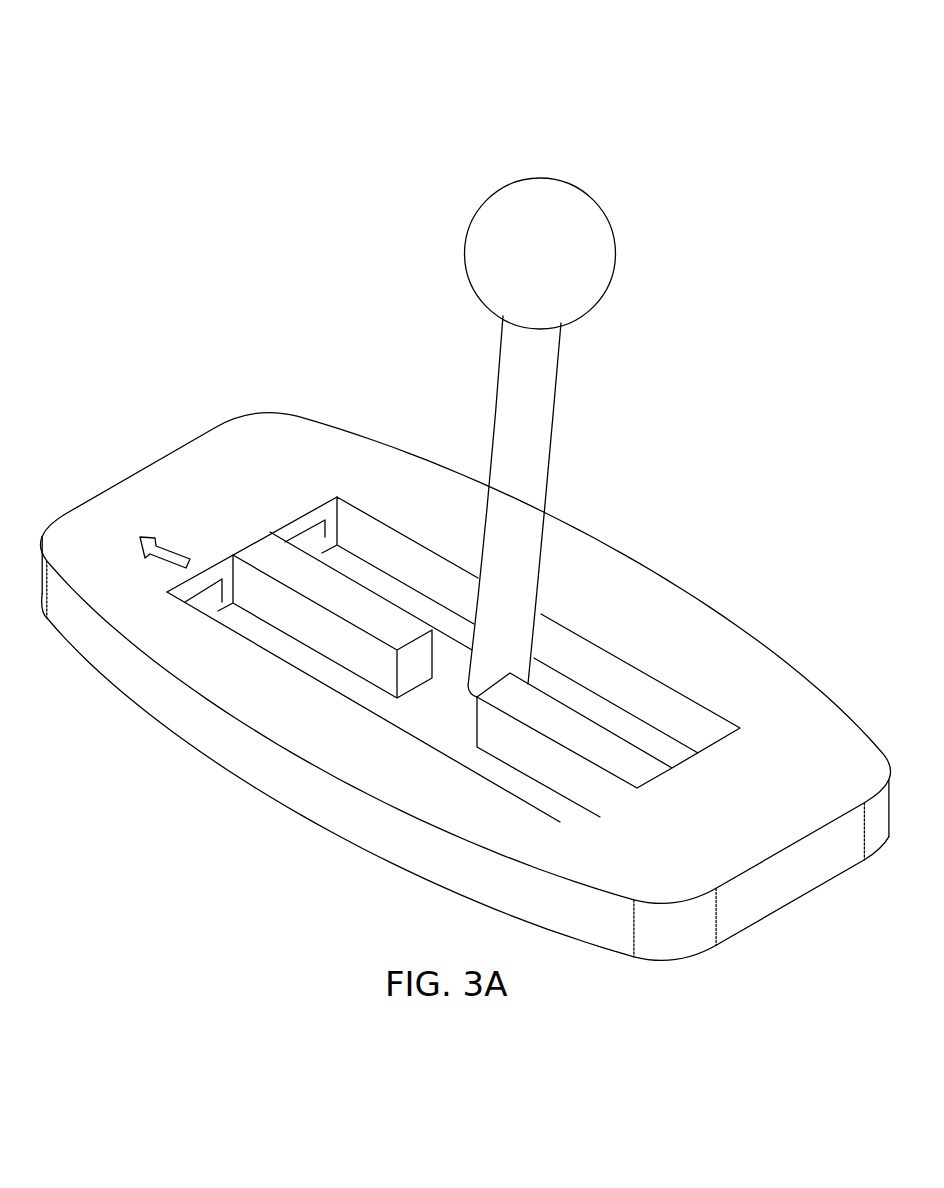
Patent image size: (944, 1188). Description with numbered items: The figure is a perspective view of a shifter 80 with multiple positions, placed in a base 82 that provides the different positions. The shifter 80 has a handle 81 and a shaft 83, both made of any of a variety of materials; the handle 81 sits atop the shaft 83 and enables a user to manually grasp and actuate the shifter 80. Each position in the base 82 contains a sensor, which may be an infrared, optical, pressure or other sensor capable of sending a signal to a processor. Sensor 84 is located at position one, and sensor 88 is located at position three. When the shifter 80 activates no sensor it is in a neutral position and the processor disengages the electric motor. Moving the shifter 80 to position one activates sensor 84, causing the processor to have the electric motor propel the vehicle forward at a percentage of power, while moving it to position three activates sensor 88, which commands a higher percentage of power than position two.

The shifter 80 is at (168, 99).
The handle 81 is at (614, 236).
The base 82 is at (722, 543).
The shaft 83 is at (560, 405).
The sensor 84 is at (207, 588).
The sensor 88 is at (322, 522).